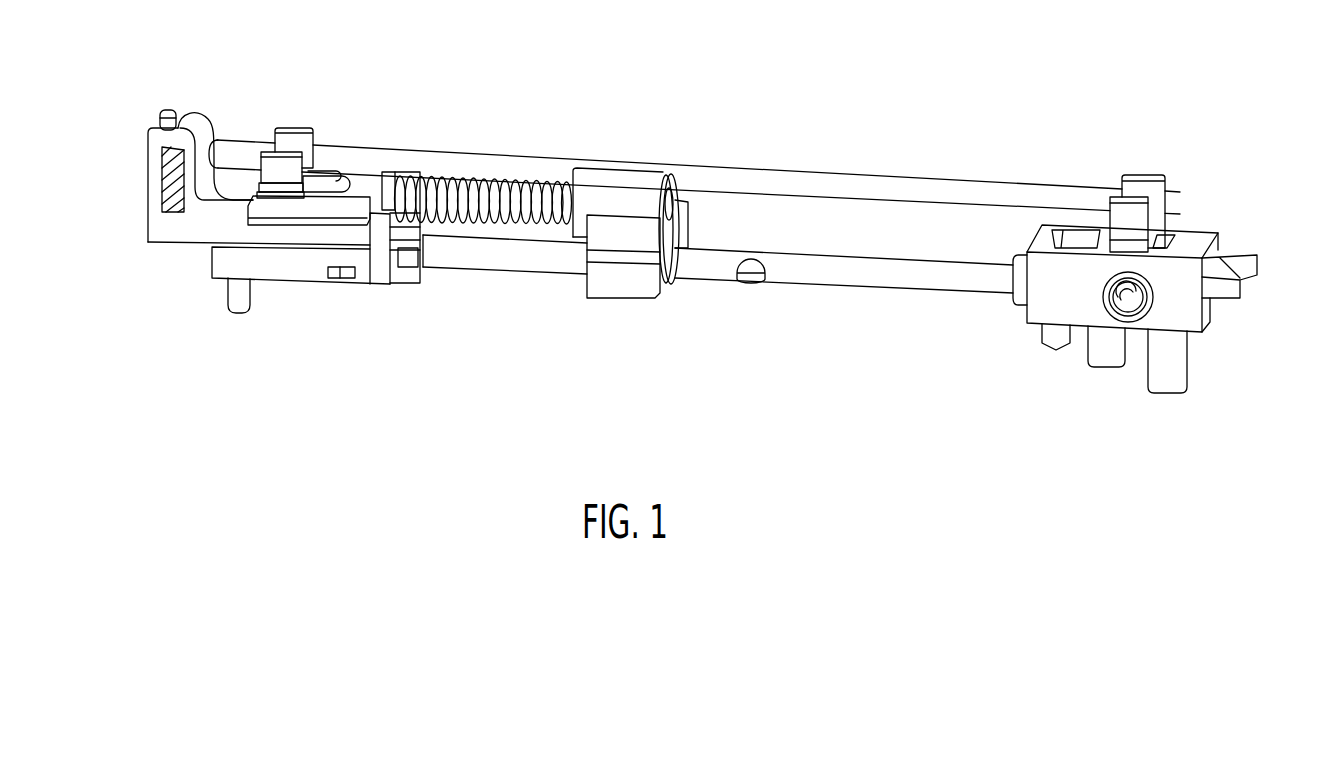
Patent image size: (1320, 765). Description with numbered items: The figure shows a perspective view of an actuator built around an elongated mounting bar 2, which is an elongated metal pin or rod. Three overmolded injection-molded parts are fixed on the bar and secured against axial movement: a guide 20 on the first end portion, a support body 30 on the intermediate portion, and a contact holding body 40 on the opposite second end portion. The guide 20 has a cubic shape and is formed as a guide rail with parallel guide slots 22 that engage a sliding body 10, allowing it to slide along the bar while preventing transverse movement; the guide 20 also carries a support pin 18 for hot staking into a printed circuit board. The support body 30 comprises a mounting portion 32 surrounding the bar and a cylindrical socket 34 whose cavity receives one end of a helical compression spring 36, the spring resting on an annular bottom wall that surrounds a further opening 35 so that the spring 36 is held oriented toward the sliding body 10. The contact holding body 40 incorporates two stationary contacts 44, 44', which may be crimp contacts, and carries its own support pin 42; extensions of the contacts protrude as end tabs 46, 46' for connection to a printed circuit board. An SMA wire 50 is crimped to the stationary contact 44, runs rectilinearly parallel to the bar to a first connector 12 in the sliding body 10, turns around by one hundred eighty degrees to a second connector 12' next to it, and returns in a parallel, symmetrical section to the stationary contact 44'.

The elongated mounting bar 2 is at (858, 368).
The sliding body 10 is at (207, 230).
The first connector 12 is at (305, 136).
The second connector 12' is at (292, 121).
The support pin 18 is at (237, 313).
The guide 20 is at (318, 272).
The guide slots 22 is at (405, 253).
The support body 30 is at (617, 352).
The mounting portion 32 is at (668, 286).
The socket 34 is at (627, 168).
The further opening 35 is at (674, 205).
The helical compression spring 36 is at (533, 225).
The contact holding body 40 is at (1240, 180).
The support pin 42 is at (1054, 340).
The stationary contact 44 is at (1108, 185).
The stationary contact 44' is at (1143, 183).
The end tab 46 is at (1167, 390).
The end tab 46' is at (1108, 380).
The SMA wire 50 is at (903, 177).